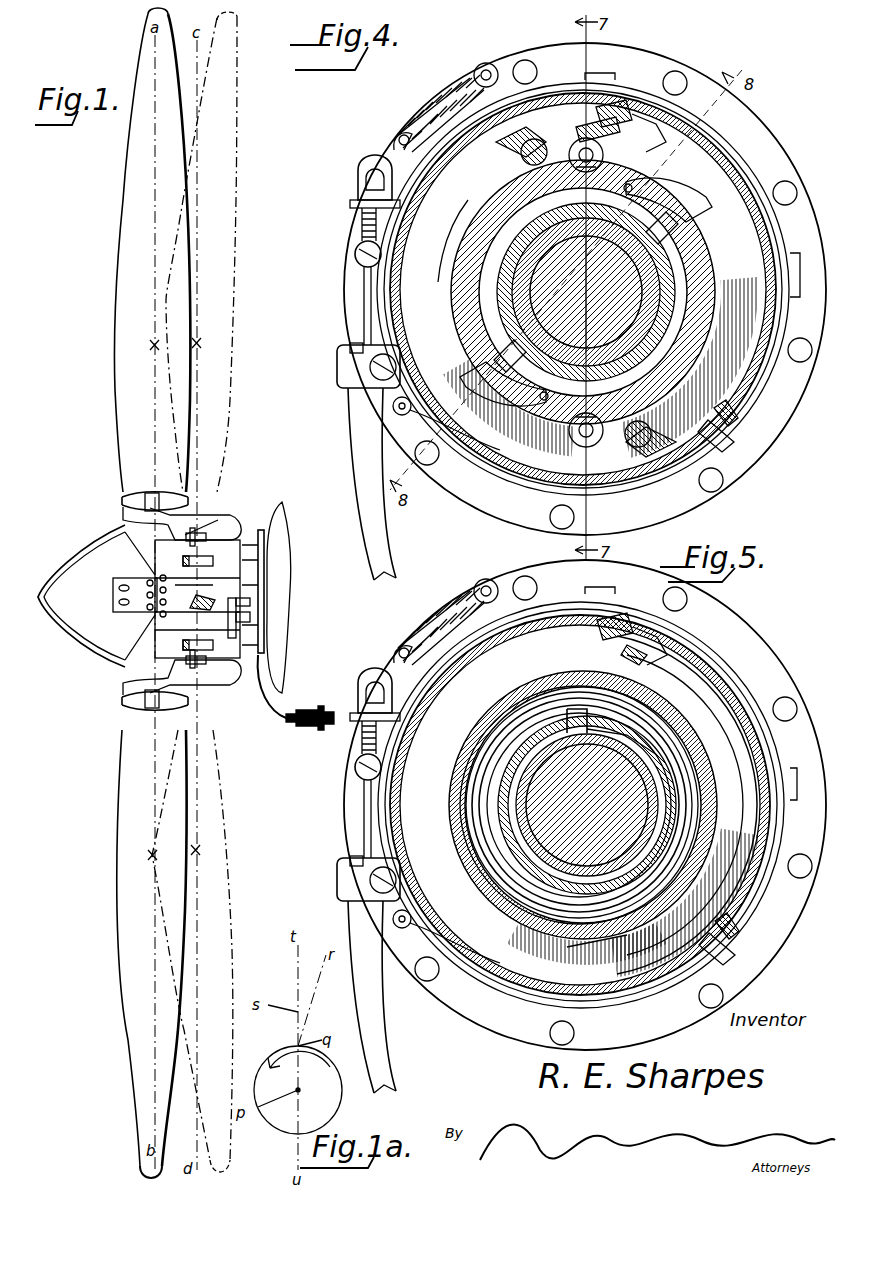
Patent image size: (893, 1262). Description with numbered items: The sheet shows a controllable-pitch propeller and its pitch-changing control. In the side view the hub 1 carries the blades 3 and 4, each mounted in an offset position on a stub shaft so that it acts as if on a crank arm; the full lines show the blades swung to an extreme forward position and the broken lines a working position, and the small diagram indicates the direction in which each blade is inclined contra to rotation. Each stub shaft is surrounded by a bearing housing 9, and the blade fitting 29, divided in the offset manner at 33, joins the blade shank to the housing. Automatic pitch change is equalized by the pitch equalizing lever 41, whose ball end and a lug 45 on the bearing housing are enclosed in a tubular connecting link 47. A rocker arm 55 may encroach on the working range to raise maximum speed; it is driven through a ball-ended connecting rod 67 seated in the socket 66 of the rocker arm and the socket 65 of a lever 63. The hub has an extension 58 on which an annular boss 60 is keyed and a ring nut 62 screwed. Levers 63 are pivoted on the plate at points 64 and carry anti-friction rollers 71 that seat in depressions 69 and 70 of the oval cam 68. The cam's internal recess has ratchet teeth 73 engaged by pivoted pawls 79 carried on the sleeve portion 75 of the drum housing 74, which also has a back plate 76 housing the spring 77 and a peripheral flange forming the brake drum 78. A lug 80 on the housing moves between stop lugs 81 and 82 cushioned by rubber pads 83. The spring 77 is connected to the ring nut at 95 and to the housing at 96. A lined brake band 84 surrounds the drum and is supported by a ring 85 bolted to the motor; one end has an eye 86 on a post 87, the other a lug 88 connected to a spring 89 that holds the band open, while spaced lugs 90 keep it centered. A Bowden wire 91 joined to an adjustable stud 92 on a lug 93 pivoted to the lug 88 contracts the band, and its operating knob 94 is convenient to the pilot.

In FIG. 1, the hub 1 is at (150, 582).
In FIG. 1, the blade 3 is at (117, 257).
In FIG. 1, the blade 4 is at (116, 894).
In FIG. 1, the bearing housing 9 is at (158, 556).
In FIG. 1, the blade fitting 29 is at (222, 520).
In FIG. 1, the offset division of blade fitting 33 is at (195, 497).
In FIG. 1, the pitch equalizing lever 41 is at (215, 580).
In FIG. 1, the lug 45 is at (180, 668).
In FIG. 1, the tubular connecting link 47 is at (208, 599).
In FIG. 1, the rocker arm 55 is at (191, 604).
In FIG. 4, the hub extension 58 is at (626, 292).
In FIG. 5, the hub extension 58 is at (627, 805).
In FIG. 4, the annular boss 60 is at (642, 283).
In FIG. 5, the ring nut 62 is at (603, 805).
In FIG. 4, the lever 63 is at (570, 329).
In FIG. 4, the pivot point 64 is at (601, 306).
In FIG. 1, the cup-shaped socket 65 is at (236, 637).
In FIG. 1, the cup-shaped socket 66 is at (250, 602).
In FIG. 1, the ball-ended connecting rod 67 is at (250, 620).
In FIG. 4, the cam 68 is at (457, 230).
In FIG. 4, the depression 69 is at (551, 314).
In FIG. 4, the depression 70 is at (586, 292).
In FIG. 4, the anti-friction roller 71 is at (563, 315).
In FIG. 4, the ratchet teeth 73 is at (583, 292).
In FIG. 4, the drum housing 74 is at (600, 289).
In FIG. 5, the drum housing 74 is at (592, 805).
In FIG. 4, the sleeve portion 75 is at (634, 292).
In FIG. 4, the back plate 76 is at (599, 289).
In FIG. 5, the back plate 76 is at (604, 805).
In FIG. 5, the spring 77 is at (579, 785).
In FIG. 4, the brake drum 78 is at (583, 249).
In FIG. 5, the brake drum 78 is at (580, 803).
In FIG. 4, the pawl 79 is at (584, 292).
In FIG. 4, the lug 80 is at (672, 118).
In FIG. 5, the lug 80 is at (678, 629).
In FIG. 4, the stop lug 81 is at (632, 95).
In FIG. 5, the stop lug 81 is at (626, 610).
In FIG. 4, the stop lug 82 is at (732, 436).
In FIG. 5, the stop lug 82 is at (734, 949).
In FIG. 4, the rubber pad 83 is at (662, 271).
In FIG. 5, the rubber pad 83 is at (685, 792).
In FIG. 4, the brake band 84 is at (583, 257).
In FIG. 5, the brake band 84 is at (580, 784).
In FIG. 1, the ring 85 is at (262, 562).
In FIG. 4, the ring 85 is at (585, 289).
In FIG. 5, the ring 85 is at (585, 805).
In FIG. 4, the eye 86 is at (402, 416).
In FIG. 5, the eye 86 is at (402, 930).
In FIG. 4, the post 87 is at (396, 412).
In FIG. 5, the post 87 is at (396, 925).
In FIG. 4, the lug 88 is at (398, 134).
In FIG. 5, the lug 88 is at (398, 647).
In FIG. 4, the spring 89 is at (440, 98).
In FIG. 5, the spring 89 is at (440, 612).
In FIG. 4, the lug 90 is at (697, 161).
In FIG. 5, the lug 90 is at (697, 682).
In FIG. 4, the Bowden wire 91 is at (346, 298).
In FIG. 5, the Bowden wire 91 is at (346, 803).
In FIG. 4, the adjustable stud 92 is at (356, 240).
In FIG. 5, the adjustable stud 92 is at (356, 756).
In FIG. 4, the lug 93 is at (360, 168).
In FIG. 5, the lug 93 is at (362, 672).
In FIG. 1, the operating knob 94 is at (324, 712).
In FIG. 5, the spring connection point 95 is at (640, 717).
In FIG. 5, the spring connection point 96 is at (589, 960).